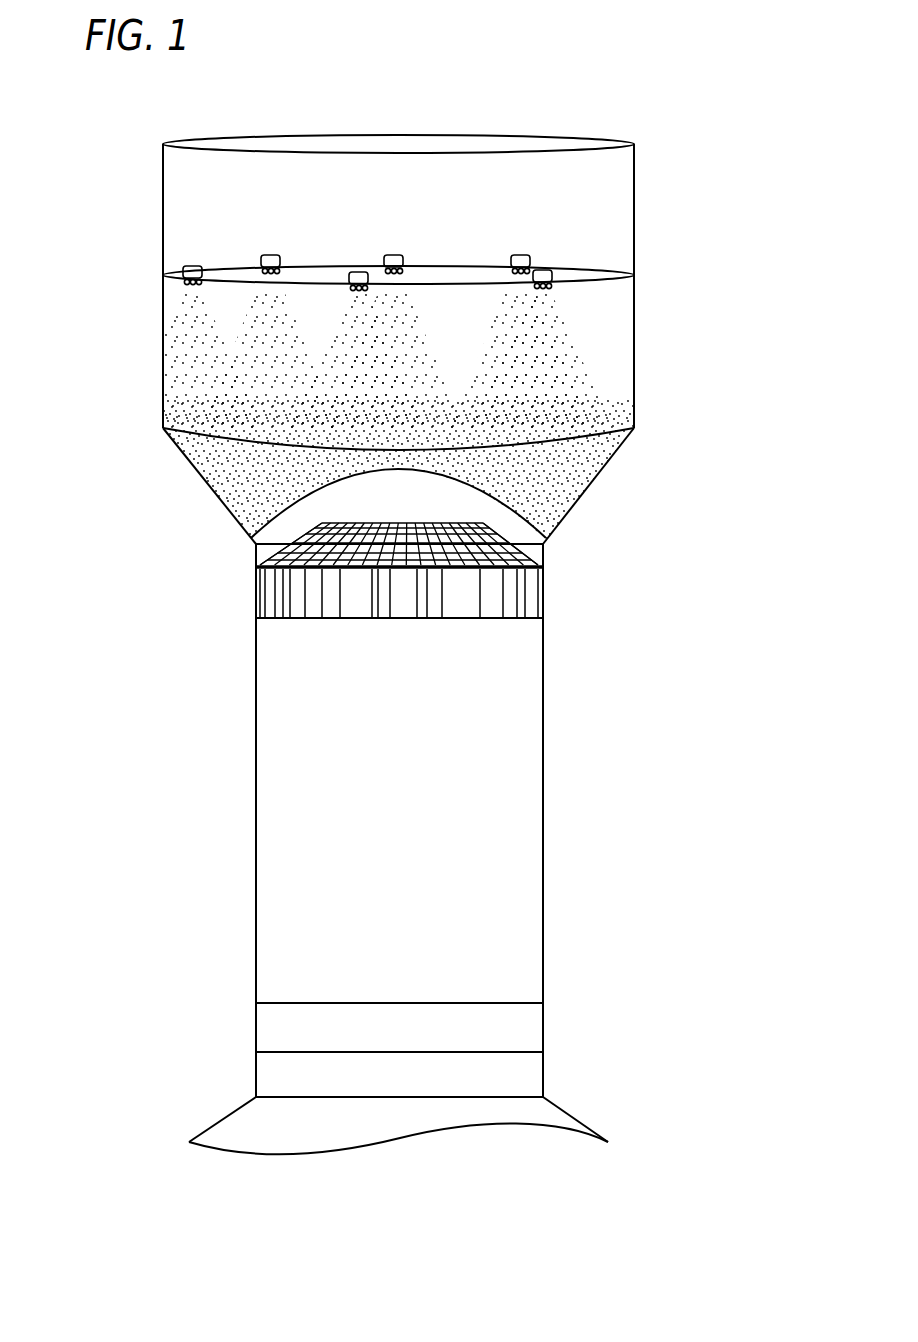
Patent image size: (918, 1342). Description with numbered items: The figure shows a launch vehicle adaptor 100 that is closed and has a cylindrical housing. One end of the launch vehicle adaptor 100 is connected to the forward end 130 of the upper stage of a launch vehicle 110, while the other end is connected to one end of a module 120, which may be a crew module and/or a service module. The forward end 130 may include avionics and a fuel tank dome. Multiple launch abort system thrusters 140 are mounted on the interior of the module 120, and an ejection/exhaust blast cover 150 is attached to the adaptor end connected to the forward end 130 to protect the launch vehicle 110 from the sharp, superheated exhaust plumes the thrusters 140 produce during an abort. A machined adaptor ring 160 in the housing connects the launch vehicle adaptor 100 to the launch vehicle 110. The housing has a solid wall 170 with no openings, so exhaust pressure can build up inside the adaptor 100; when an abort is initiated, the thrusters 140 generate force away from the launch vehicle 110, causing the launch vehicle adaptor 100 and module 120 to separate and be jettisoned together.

The launch vehicle adaptor 100 is at (716, 274).
The launch vehicle 110 is at (716, 565).
The module 120 is at (716, 144).
The forward end of the upper stage 130 is at (360, 532).
The launch abort system thrusters 140 is at (352, 284).
The ejection/exhaust blast cover 150 is at (272, 508).
The machined adaptor ring 160 is at (230, 559).
The solid wall 170 is at (152, 463).